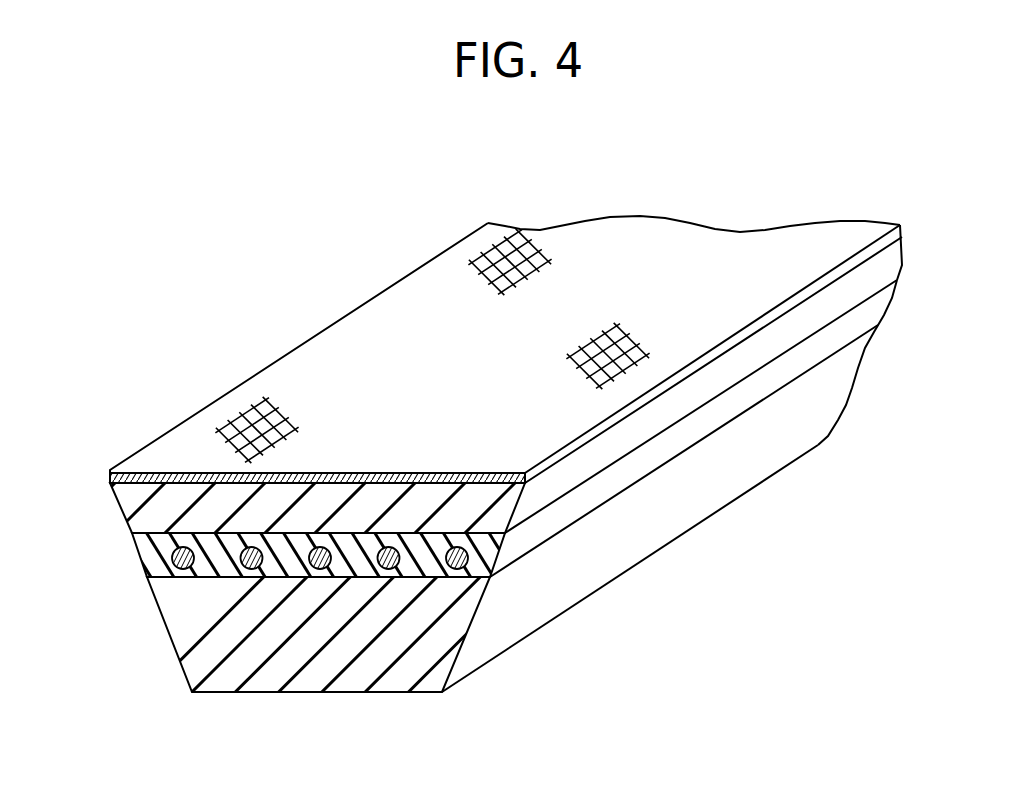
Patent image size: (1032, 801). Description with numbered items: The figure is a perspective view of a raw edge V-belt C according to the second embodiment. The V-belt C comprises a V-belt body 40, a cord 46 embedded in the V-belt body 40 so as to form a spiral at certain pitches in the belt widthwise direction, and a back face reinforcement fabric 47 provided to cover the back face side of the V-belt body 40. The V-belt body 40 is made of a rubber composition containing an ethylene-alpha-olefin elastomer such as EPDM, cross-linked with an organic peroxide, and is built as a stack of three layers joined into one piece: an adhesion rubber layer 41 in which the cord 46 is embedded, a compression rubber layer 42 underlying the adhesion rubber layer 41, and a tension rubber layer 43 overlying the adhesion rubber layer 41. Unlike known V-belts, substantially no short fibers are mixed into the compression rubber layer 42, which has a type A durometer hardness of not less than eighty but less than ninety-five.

The raw edge V-belt C is at (369, 193).
The V-belt body 40 is at (518, 645).
The adhesion rubber layer 41 is at (145, 567).
The compression rubber layer 42 is at (183, 642).
The tension rubber layer 43 is at (125, 512).
The cord 46 is at (488, 568).
The back face reinforcement fabric 47 is at (268, 366).